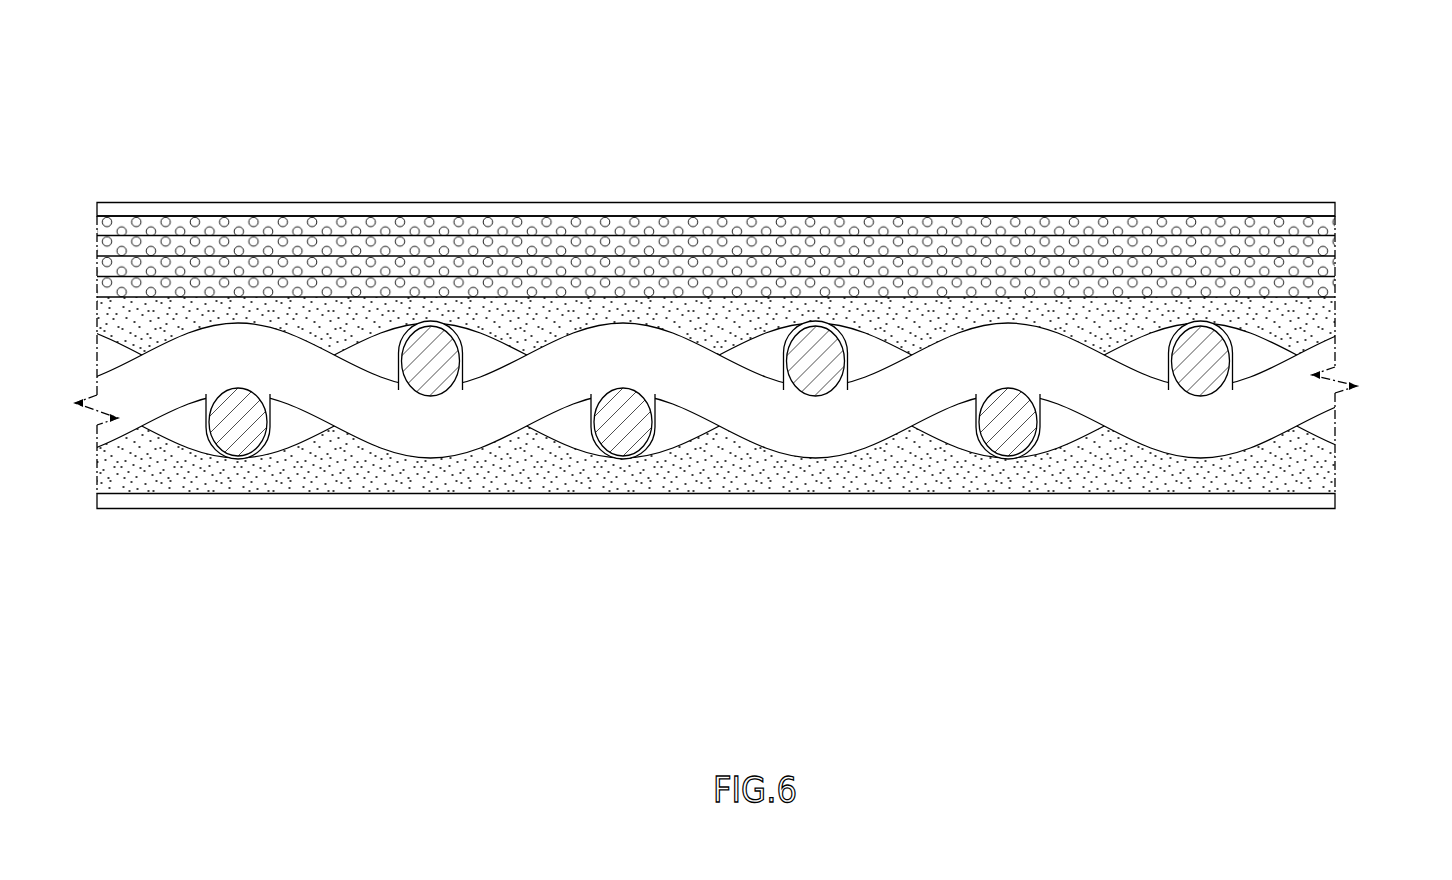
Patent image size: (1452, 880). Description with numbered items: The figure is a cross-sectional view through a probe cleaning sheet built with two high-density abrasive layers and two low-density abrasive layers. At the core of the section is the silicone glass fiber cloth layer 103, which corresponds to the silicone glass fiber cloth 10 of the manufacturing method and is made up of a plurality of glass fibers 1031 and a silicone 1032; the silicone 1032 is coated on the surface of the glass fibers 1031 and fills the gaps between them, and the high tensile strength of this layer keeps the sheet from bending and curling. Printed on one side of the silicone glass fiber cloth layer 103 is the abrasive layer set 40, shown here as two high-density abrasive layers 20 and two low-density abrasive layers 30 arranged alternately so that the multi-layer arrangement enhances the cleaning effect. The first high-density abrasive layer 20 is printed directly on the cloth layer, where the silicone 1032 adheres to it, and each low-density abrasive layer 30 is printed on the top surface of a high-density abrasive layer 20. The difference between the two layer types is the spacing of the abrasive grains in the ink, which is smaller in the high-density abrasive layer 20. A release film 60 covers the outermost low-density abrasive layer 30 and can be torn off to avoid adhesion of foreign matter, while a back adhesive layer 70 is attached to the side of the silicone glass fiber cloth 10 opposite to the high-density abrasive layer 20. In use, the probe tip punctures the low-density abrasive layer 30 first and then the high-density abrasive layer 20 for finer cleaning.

The silicone glass fiber cloth 10 is at (747, 441).
The high-density abrasive layer 20 is at (716, 183).
The low-density abrasive layer 30 is at (1340, 77).
The abrasive layer set 40 is at (762, 166).
The release film 60 is at (433, 207).
The back adhesive layer 70 is at (975, 498).
The silicone glass fiber cloth layer 103 is at (720, 463).
The glass fibers 1031 is at (720, 400).
The silicone 1032 is at (1288, 470).